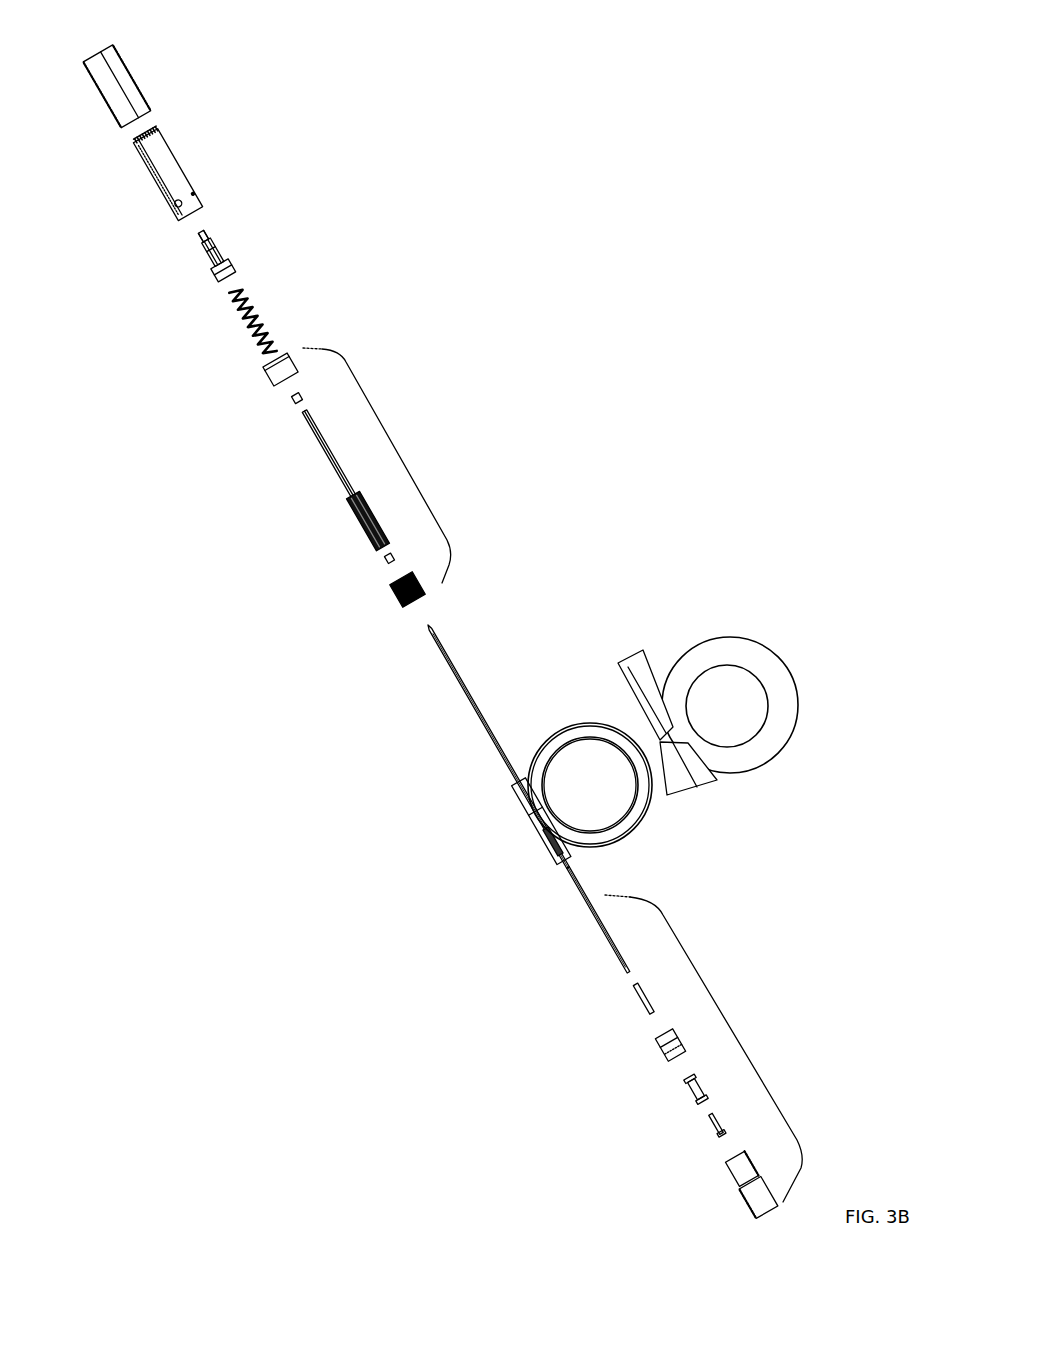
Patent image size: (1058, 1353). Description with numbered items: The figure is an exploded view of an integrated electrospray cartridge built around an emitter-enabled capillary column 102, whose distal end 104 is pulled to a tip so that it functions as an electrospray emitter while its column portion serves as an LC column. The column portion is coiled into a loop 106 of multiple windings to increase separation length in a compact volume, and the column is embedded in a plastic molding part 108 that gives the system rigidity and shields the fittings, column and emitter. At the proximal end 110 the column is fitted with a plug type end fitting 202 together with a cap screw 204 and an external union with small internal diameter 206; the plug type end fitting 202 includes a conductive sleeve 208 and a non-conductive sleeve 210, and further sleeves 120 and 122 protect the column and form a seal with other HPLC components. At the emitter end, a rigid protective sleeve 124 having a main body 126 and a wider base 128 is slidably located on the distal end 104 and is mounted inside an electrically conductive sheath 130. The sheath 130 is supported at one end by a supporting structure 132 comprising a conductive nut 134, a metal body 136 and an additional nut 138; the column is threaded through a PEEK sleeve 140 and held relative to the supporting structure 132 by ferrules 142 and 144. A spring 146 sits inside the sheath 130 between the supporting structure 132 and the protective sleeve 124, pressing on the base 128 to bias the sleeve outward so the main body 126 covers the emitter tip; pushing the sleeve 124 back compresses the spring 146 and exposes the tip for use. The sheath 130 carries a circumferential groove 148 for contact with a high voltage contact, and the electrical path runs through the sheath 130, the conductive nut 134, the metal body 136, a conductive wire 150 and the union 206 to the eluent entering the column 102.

The emitter-enabled capillary column 102 is at (502, 760).
The distal end 104 is at (428, 628).
The loop 106 is at (635, 823).
The molding part 108 is at (760, 657).
The proximal end 110 is at (587, 904).
The sleeve 120 is at (605, 937).
The sleeve 122 is at (642, 1000).
The protective sleeve 124 is at (208, 257).
The main body 126 is at (212, 245).
The base 128 is at (235, 270).
The electrically conductive sheath 130 is at (155, 185).
The supporting structure 132 is at (397, 455).
The conductive nut 134 is at (278, 370).
The metal body 136 is at (355, 518).
The additional nut 138 is at (397, 598).
The sleeve 140 is at (338, 472).
The ferrule 142 is at (292, 403).
The ferrule 144 is at (383, 560).
The spring 146 is at (237, 307).
The circumferential groove 148 is at (160, 133).
The conductive wire 150 is at (123, 75).
The plug type end fitting 202 is at (730, 1027).
The cap screw 204 is at (667, 1055).
The external union with small internal diameter 206 is at (740, 1172).
The conductive sleeve 208 is at (692, 1093).
The non-conductive sleeve 210 is at (717, 1132).